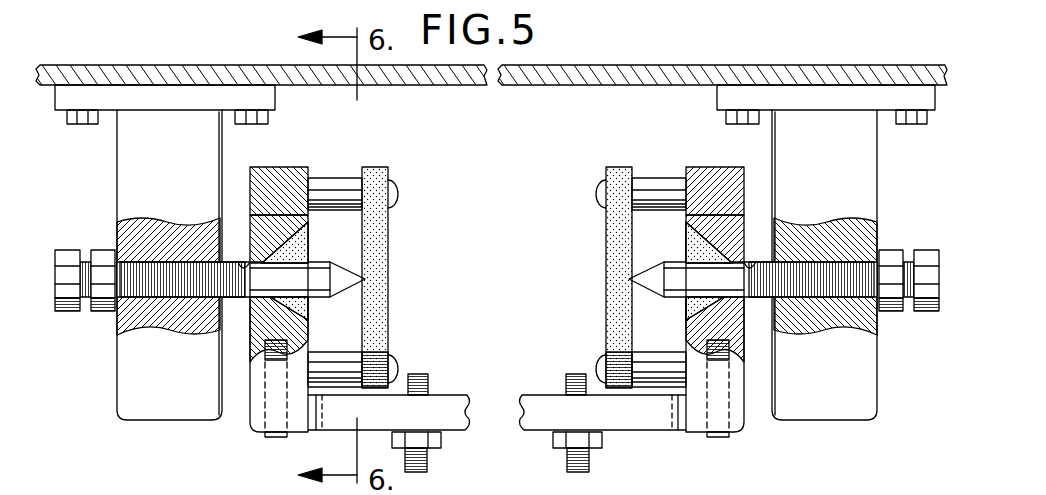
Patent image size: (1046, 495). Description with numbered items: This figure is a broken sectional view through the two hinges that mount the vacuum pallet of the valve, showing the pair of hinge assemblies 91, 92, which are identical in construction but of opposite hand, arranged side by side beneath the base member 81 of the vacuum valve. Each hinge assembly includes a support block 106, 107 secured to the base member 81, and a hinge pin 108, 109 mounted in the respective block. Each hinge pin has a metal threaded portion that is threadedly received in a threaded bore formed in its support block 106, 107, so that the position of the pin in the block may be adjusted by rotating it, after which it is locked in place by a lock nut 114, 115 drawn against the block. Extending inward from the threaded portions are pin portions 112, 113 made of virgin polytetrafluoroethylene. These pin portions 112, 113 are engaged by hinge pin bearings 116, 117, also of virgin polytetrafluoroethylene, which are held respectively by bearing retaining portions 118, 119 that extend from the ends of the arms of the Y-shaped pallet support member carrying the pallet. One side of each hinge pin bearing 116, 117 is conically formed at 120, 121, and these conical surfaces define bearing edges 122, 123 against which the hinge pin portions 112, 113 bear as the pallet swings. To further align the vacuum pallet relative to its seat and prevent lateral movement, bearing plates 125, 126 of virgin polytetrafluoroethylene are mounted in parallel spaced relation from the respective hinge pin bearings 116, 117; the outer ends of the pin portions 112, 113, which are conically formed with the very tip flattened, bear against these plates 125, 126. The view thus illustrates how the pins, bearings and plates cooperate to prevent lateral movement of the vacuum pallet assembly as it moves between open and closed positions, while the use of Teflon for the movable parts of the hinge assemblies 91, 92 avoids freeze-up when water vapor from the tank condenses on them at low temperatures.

The base member 81 is at (637, 78).
The hinge assembly 91 is at (285, 155).
The hinge assembly 92 is at (687, 155).
The support block 106 is at (177, 130).
The support block 107 is at (815, 140).
The hinge pin 108 is at (175, 310).
The hinge pin 109 is at (820, 310).
The pin portion 112 is at (320, 265).
The pin portion 113 is at (680, 262).
The lock nut 114 is at (100, 250).
The lock nut 115 is at (892, 248).
The hinge pin bearing 116 is at (304, 222).
The hinge pin bearing 117 is at (698, 222).
The bearing retaining portion 118 is at (257, 418).
The bearing retaining portion 119 is at (738, 418).
The conically formed side 120 is at (300, 303).
The conically formed side 121 is at (700, 303).
The bearing edge 122 is at (245, 262).
The bearing edge 123 is at (756, 262).
The bearing plate 125 is at (380, 256).
The bearing plate 126 is at (614, 256).